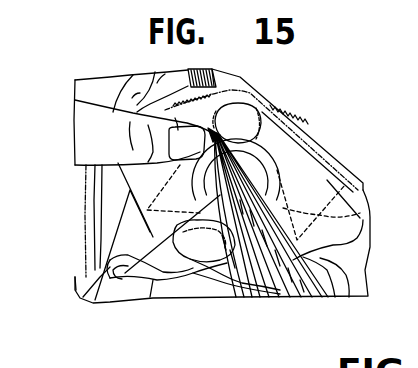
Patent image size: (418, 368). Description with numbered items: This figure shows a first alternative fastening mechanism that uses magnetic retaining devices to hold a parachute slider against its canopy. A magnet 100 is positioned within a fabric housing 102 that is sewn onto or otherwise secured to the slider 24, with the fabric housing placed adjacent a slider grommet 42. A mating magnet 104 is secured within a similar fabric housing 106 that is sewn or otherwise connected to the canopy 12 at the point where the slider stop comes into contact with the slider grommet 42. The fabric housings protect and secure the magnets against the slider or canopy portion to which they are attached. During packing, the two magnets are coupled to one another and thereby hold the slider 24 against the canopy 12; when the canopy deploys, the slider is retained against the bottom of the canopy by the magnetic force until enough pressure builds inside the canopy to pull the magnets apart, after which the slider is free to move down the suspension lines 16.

The canopy 12 is at (120, 292).
The suspension lines 16 is at (300, 298).
The slider 24 is at (312, 143).
The slider grommet 42 is at (268, 160).
The magnet 100 is at (170, 132).
The fabric housing 102 is at (240, 110).
The mating magnet 104 is at (190, 238).
The fabric housing 106 is at (147, 259).